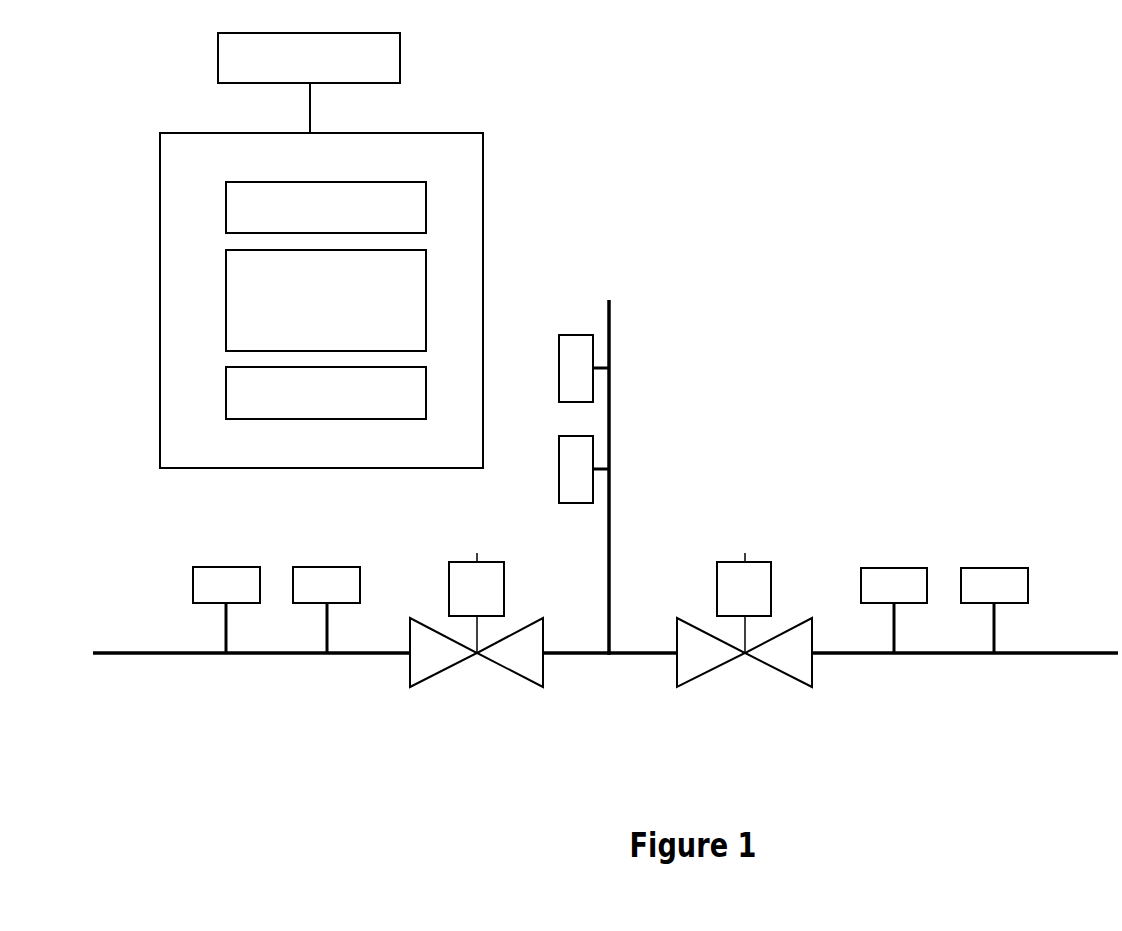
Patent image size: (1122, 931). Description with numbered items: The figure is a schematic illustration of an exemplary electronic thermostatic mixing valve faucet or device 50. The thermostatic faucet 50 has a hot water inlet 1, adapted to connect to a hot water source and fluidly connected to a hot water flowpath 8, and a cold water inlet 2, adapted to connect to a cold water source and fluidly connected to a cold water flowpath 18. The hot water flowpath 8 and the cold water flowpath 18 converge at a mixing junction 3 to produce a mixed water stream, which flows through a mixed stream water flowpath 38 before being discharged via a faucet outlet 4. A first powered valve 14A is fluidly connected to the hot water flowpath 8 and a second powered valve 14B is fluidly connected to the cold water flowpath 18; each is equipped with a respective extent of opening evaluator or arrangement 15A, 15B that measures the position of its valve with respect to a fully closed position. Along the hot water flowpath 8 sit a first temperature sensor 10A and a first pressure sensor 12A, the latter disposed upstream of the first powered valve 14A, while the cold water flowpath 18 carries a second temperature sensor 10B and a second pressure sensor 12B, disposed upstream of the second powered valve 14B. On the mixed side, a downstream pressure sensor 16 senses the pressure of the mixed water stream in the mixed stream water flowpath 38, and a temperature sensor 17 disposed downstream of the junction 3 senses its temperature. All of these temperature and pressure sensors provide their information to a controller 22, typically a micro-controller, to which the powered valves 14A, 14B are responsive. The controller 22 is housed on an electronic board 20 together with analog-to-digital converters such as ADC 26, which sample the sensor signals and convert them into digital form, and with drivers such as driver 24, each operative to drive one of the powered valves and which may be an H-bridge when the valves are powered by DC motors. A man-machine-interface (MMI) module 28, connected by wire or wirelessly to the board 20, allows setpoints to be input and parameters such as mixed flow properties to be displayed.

The hot water inlet 1 is at (108, 653).
The cold water inlet 2 is at (1113, 653).
The mixing junction 3 is at (609, 653).
The faucet outlet 4 is at (612, 337).
The hot water flowpath 8 is at (306, 674).
The first temperature sensor 10A is at (226, 587).
The second temperature sensor 10B is at (994, 587).
The first pressure sensor 12A is at (326, 587).
The second pressure sensor 12B is at (894, 587).
The first powered valve 14A is at (476, 667).
The second powered valve 14B is at (744, 667).
The extent of opening evaluator 15A is at (476, 567).
The extent of opening evaluator 15B is at (744, 567).
The downstream pressure sensor 16 is at (565, 469).
The temperature sensor 17 is at (562, 368).
The cold water flowpath 18 is at (875, 687).
The electronic board 20 is at (302, 275).
The controller 22 is at (312, 300).
The driver 24 is at (312, 393).
The analog-to-digital converter 26 is at (312, 207).
The man-machine-interface module 28 is at (294, 58).
The mixed stream water flowpath 38 is at (651, 536).
The electronic thermostatic mixing valve faucet 50 is at (914, 302).